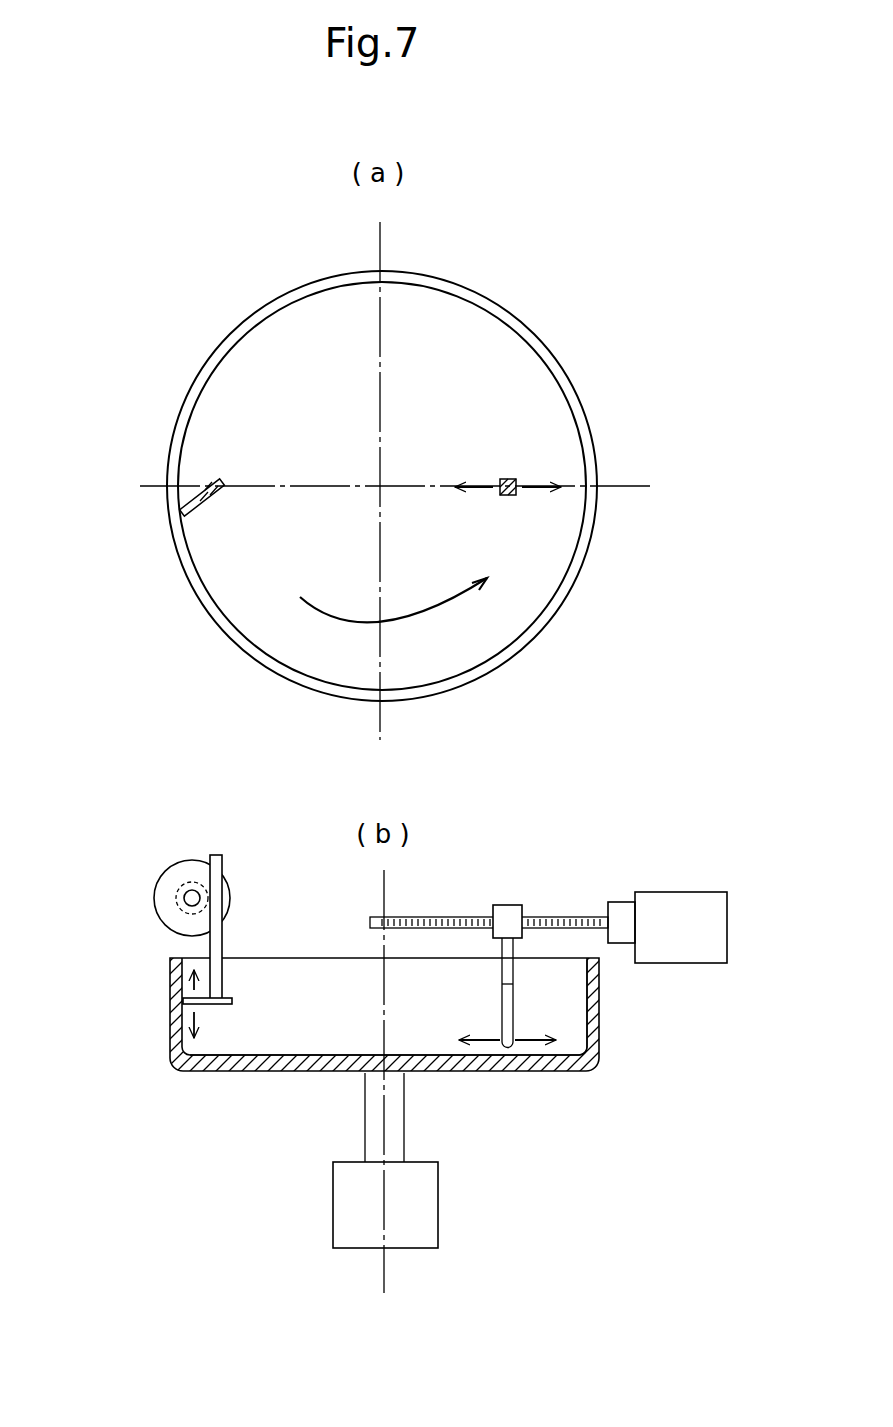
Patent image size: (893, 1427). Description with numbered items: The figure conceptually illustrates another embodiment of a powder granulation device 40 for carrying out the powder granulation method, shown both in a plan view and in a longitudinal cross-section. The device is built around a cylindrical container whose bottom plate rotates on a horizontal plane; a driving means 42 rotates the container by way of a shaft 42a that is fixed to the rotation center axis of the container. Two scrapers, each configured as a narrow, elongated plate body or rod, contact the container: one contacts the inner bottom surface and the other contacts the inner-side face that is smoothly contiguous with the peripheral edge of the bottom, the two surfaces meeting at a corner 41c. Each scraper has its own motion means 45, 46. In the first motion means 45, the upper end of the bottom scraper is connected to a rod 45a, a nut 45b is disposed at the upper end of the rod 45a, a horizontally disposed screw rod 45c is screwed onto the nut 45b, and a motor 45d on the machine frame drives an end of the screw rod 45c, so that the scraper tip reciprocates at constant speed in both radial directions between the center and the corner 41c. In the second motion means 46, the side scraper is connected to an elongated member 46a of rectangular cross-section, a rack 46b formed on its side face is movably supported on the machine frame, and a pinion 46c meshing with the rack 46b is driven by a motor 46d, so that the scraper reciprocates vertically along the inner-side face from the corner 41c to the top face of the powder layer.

The powder granulation device 40 is at (218, 308).
The corner 41c is at (588, 1072).
The driving means 42 is at (349, 1206).
The shaft 42a is at (400, 1107).
The motion means 45 is at (548, 890).
The rod 45a is at (502, 966).
The nut 45b is at (508, 910).
The screw rod 45c is at (452, 917).
The motor 45d is at (672, 905).
The motion means 46 is at (207, 850).
The elongated member 46a is at (218, 945).
The rack 46b is at (210, 944).
The pinion 46c is at (184, 899).
The motor 46d is at (175, 886).